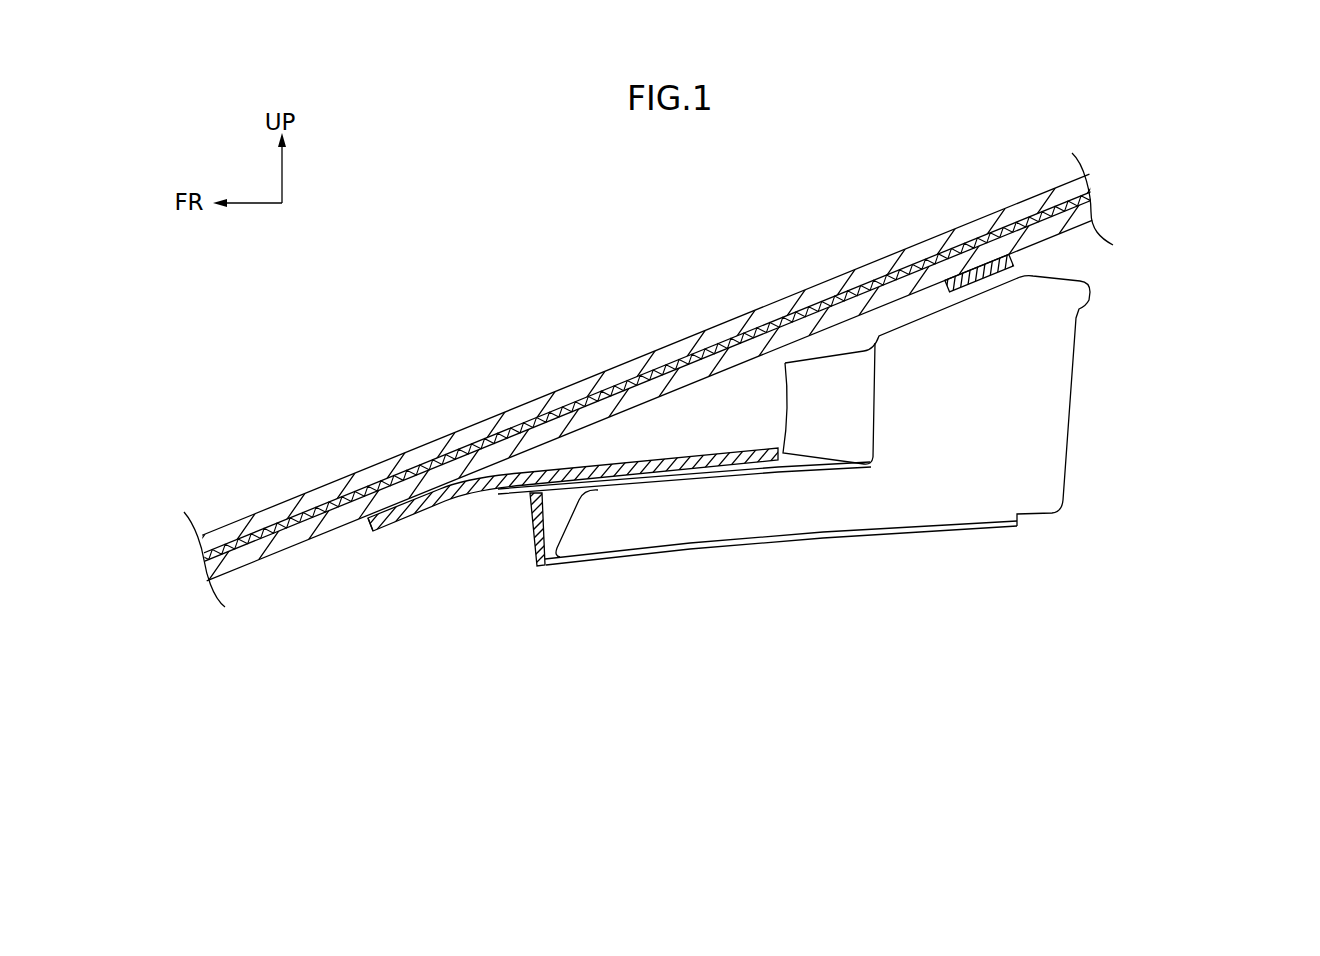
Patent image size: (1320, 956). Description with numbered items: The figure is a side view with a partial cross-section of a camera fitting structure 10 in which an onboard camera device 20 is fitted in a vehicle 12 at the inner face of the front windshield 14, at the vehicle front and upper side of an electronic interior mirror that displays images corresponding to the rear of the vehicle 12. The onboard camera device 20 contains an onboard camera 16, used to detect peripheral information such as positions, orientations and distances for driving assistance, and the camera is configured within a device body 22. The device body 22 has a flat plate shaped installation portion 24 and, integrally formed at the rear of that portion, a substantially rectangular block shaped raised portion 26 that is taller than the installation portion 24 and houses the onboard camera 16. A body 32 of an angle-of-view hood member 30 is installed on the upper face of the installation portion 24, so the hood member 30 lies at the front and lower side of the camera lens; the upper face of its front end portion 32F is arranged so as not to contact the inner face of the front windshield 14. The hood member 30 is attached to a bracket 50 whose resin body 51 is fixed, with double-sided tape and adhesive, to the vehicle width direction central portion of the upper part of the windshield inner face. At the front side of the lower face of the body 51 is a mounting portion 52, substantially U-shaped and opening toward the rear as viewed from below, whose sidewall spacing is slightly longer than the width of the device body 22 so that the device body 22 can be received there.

The camera fitting structure 10 is at (729, 473).
The vehicle 12 is at (678, 387).
The front windshield 14 is at (668, 338).
The onboard camera 16 is at (850, 402).
The onboard camera device 20 is at (829, 438).
The device body 22 is at (1060, 516).
The installation portion 24 is at (820, 466).
The raised portion 26 is at (1063, 353).
The angle-of-view hood member 30 is at (589, 510).
The body of hood member 32 is at (589, 523).
The front end portion 32F is at (364, 528).
The bracket 50 is at (1092, 293).
The body of bracket 51 is at (1020, 258).
The mounting portion 52 is at (545, 568).